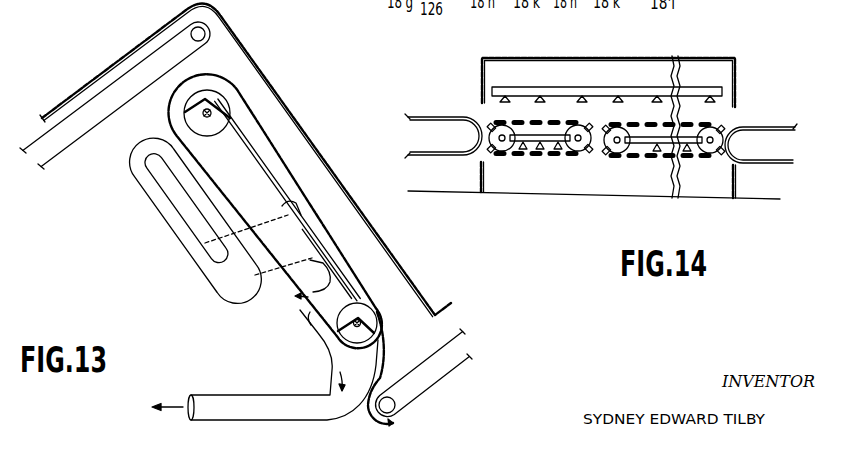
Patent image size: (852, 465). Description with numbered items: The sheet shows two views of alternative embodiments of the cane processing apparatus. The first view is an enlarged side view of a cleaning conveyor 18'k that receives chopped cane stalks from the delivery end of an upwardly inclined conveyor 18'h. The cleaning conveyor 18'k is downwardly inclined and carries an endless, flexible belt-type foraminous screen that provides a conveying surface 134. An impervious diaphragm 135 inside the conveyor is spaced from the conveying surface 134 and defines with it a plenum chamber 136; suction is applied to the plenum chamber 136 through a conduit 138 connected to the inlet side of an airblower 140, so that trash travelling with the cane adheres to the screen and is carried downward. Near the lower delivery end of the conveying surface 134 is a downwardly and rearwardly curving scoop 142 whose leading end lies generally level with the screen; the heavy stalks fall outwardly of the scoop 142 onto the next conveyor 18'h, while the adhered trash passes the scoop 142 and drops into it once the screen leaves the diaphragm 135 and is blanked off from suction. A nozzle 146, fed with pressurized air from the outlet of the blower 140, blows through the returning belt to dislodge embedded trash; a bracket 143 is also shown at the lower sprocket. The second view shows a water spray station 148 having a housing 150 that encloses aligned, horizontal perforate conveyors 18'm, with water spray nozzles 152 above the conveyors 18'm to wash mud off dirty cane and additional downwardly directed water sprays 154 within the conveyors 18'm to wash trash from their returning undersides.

In FIG. 13, the upwardly inclined conveyor 18'h is at (269, 219).
In FIG. 13, the cleaning conveyor 18'k is at (245, 160).
In FIG. 13, the conveying surface 134 is at (324, 243).
In FIG. 13, the impervious diaphragm 135 is at (338, 275).
In FIG. 13, the plenum chamber 136 is at (268, 170).
In FIG. 13, the conduit 138 is at (197, 218).
In FIG. 13, the airblower 140 is at (136, 174).
In FIG. 13, the scoop 142 is at (385, 327).
In FIG. 13, the sprocket bracket 143 is at (353, 312).
In FIG. 13, the nozzle 146 is at (303, 314).
In FIG. 14, the water spray station 148 is at (727, 55).
In FIG. 14, the housing 150 is at (586, 58).
In FIG. 14, the water spray nozzles 152 is at (540, 97).
In FIG. 14, the downwardly directed water sprays 154 is at (540, 150).
In FIG. 14, the perforate conveyors 18'm is at (541, 111).